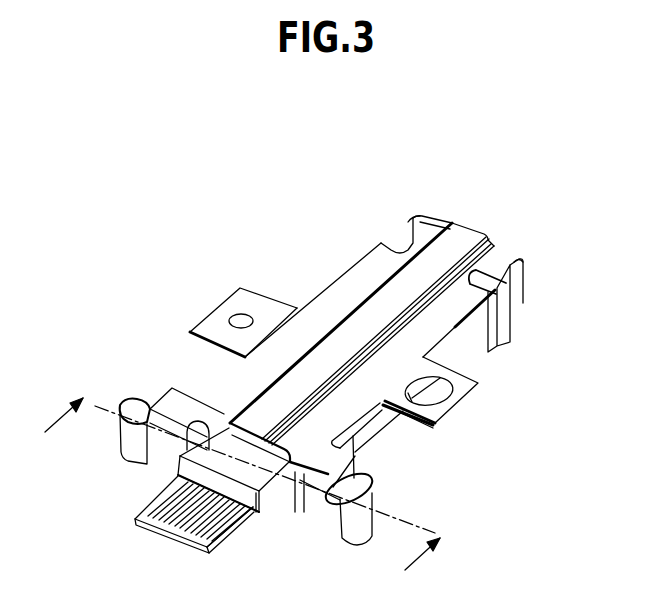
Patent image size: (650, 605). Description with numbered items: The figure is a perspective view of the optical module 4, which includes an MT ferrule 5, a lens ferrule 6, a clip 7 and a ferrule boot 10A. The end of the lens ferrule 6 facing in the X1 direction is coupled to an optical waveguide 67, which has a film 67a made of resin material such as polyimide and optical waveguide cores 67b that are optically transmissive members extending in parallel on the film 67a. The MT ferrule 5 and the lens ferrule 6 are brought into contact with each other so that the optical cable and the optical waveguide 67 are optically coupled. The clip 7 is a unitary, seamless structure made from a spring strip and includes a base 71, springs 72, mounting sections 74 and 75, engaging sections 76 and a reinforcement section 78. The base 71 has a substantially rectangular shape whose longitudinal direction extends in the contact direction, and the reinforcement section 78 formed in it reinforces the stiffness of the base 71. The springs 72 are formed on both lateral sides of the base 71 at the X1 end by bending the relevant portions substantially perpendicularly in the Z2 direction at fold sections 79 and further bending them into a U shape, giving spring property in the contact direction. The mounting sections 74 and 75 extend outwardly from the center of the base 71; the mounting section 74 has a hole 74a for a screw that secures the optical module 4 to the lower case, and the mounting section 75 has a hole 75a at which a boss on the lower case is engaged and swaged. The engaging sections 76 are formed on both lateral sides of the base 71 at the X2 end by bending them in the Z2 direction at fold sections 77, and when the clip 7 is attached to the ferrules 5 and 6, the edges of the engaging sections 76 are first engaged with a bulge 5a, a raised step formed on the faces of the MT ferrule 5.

The optical module 4 is at (172, 157).
The MT ferrule 5 is at (460, 351).
The bulge 5a is at (392, 243).
The lens ferrule 6 is at (365, 439).
The clip 7 is at (328, 284).
The base 71 is at (358, 285).
The springs 72 is at (140, 405).
The mounting section 74 is at (468, 383).
The hole 74a is at (443, 393).
The mounting section 75 is at (208, 322).
The hole 75a is at (240, 318).
The engaging sections 76 is at (520, 283).
The fold sections 77 is at (418, 221).
The reinforcement section 78 is at (318, 362).
The fold sections 79 is at (172, 420).
The ferrule boot 10A is at (228, 469).
The optical waveguide 67 is at (171, 534).
The film 67a is at (215, 530).
The optical waveguide cores 67b is at (198, 518).